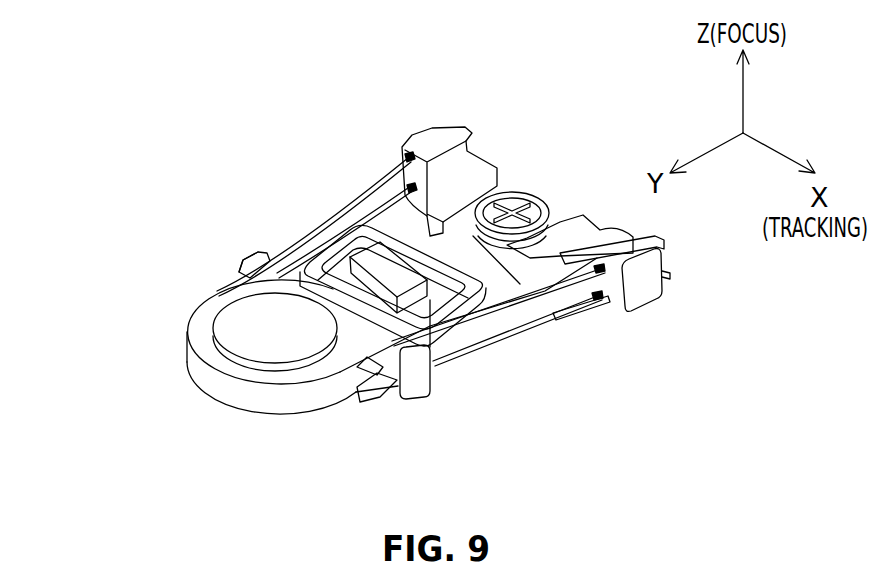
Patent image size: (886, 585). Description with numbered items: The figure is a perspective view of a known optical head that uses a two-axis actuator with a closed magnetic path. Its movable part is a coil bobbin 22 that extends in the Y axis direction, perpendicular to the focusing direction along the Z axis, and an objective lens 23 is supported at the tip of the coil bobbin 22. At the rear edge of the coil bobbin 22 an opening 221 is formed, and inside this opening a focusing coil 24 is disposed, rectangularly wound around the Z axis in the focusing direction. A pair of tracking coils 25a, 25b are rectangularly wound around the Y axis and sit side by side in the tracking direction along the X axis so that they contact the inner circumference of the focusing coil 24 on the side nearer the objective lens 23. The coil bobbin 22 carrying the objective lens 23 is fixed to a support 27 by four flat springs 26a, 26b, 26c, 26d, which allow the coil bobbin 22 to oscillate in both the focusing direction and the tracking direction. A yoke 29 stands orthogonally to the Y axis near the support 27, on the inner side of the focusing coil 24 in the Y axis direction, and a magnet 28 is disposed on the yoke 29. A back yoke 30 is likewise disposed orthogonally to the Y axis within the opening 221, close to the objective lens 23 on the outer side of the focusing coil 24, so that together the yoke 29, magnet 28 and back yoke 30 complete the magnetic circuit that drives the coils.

The coil bobbin 22 is at (196, 332).
The objective lens 23 is at (247, 320).
The opening 221 is at (240, 268).
The focusing coil 24 is at (450, 340).
The tracking coil 25a is at (398, 398).
The tracking coil 25b is at (258, 253).
The flat spring 26a is at (533, 303).
The flat spring 26b is at (490, 342).
The flat spring 26c is at (372, 213).
The flat spring 26d is at (333, 226).
The support 27 is at (577, 235).
The magnet 28 is at (444, 205).
The yoke 29 is at (480, 236).
The back yoke 30 is at (345, 298).